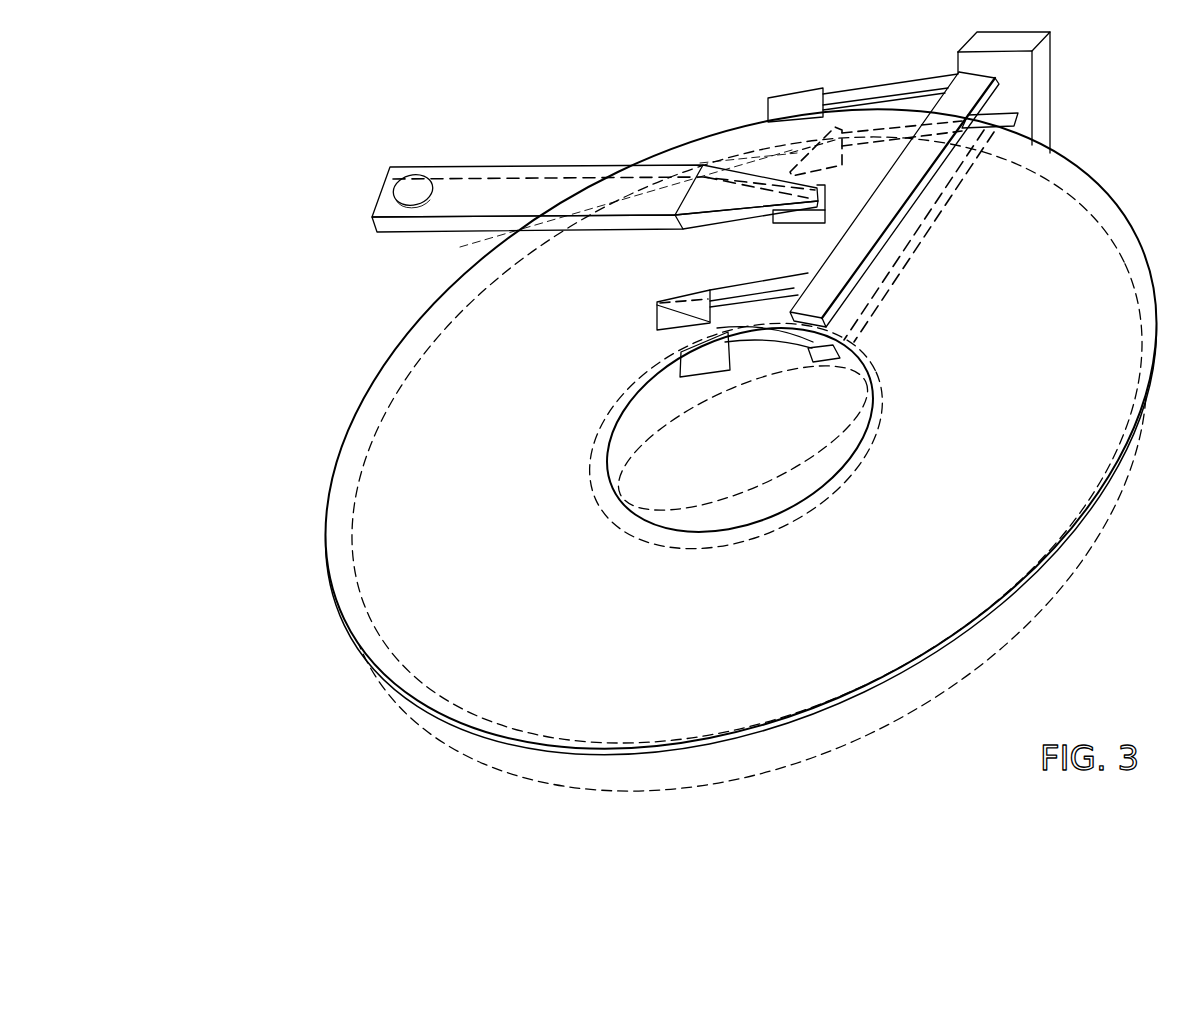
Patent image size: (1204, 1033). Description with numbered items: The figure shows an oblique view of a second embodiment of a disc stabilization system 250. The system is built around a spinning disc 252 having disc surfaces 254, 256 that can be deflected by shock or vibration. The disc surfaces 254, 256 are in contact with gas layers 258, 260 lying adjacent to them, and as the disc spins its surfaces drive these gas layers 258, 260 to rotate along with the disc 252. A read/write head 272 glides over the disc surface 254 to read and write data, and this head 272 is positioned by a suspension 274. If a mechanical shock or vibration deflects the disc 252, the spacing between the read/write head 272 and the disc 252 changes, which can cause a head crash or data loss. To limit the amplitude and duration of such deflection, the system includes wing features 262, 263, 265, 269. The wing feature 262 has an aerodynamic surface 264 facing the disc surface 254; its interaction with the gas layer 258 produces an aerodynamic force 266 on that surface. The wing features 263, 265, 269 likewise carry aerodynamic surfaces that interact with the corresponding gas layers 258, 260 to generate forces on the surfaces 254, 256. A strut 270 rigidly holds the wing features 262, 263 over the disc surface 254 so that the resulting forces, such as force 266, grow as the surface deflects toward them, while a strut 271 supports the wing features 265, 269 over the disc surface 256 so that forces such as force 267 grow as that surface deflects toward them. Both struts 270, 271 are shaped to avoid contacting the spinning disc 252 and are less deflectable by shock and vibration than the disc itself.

The disc stabilization system 250 is at (326, 192).
The spinning disc 252 is at (325, 573).
The disc surface 254 is at (660, 639).
The disc surface 256 is at (647, 757).
The gas layer 258 is at (352, 513).
The gas layer 260 is at (417, 730).
The wing feature 262 is at (813, 98).
The wing feature 263 is at (660, 303).
The aerodynamic surface 264 is at (757, 127).
The wing feature 265 is at (733, 357).
The aerodynamic force 266 is at (799, 135).
The aerodynamic force 267 is at (690, 358).
The wing feature 269 is at (718, 144).
The strut 270 is at (997, 72).
The strut 271 is at (1000, 122).
The read/write head 272 is at (813, 225).
The suspension 274 is at (545, 166).